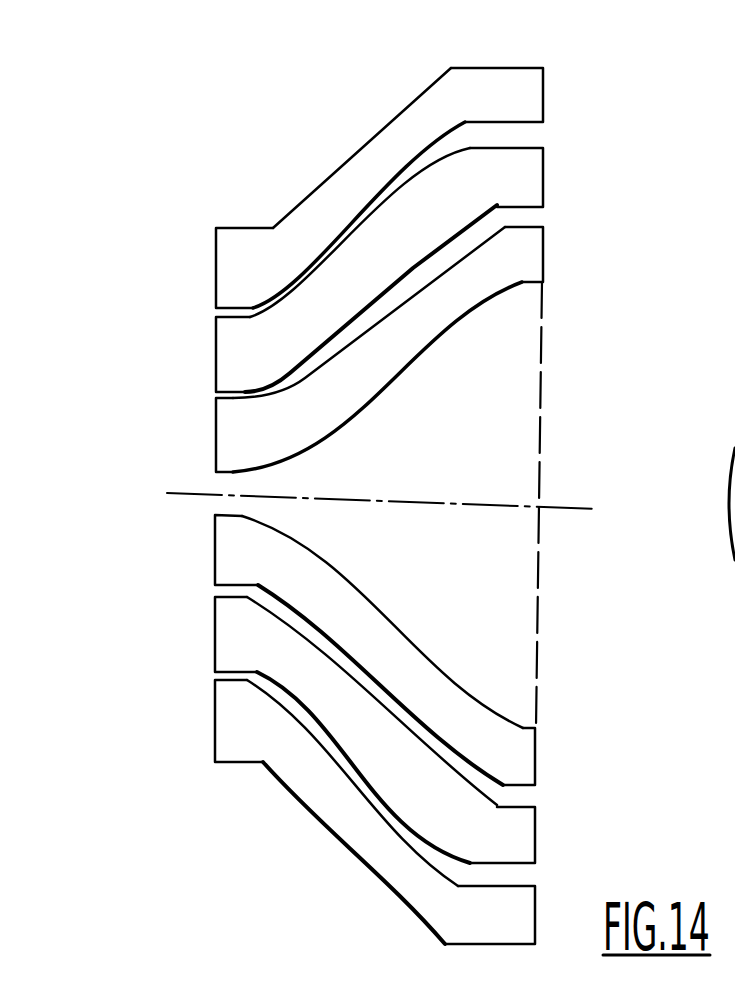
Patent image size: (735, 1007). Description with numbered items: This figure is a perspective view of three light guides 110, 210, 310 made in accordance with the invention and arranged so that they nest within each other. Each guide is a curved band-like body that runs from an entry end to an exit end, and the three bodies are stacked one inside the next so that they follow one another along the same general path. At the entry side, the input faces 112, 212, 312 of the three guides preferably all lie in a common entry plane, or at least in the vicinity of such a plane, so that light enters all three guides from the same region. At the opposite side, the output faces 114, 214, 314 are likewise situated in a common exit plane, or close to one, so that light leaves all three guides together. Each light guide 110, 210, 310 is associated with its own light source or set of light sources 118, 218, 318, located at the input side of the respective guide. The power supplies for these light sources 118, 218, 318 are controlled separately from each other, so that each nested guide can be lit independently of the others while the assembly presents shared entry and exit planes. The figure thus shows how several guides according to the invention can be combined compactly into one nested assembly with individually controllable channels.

The light guide 110 is at (363, 177).
The input face 112 is at (215, 720).
The output face 114 is at (543, 103).
The light source 118 is at (216, 268).
The light guide 210 is at (410, 240).
The input face 212 is at (215, 628).
The output face 214 is at (543, 173).
The light source 218 is at (216, 357).
The light guide 310 is at (330, 595).
The input face 312 is at (215, 553).
The output face 314 is at (543, 253).
The light source 318 is at (216, 438).